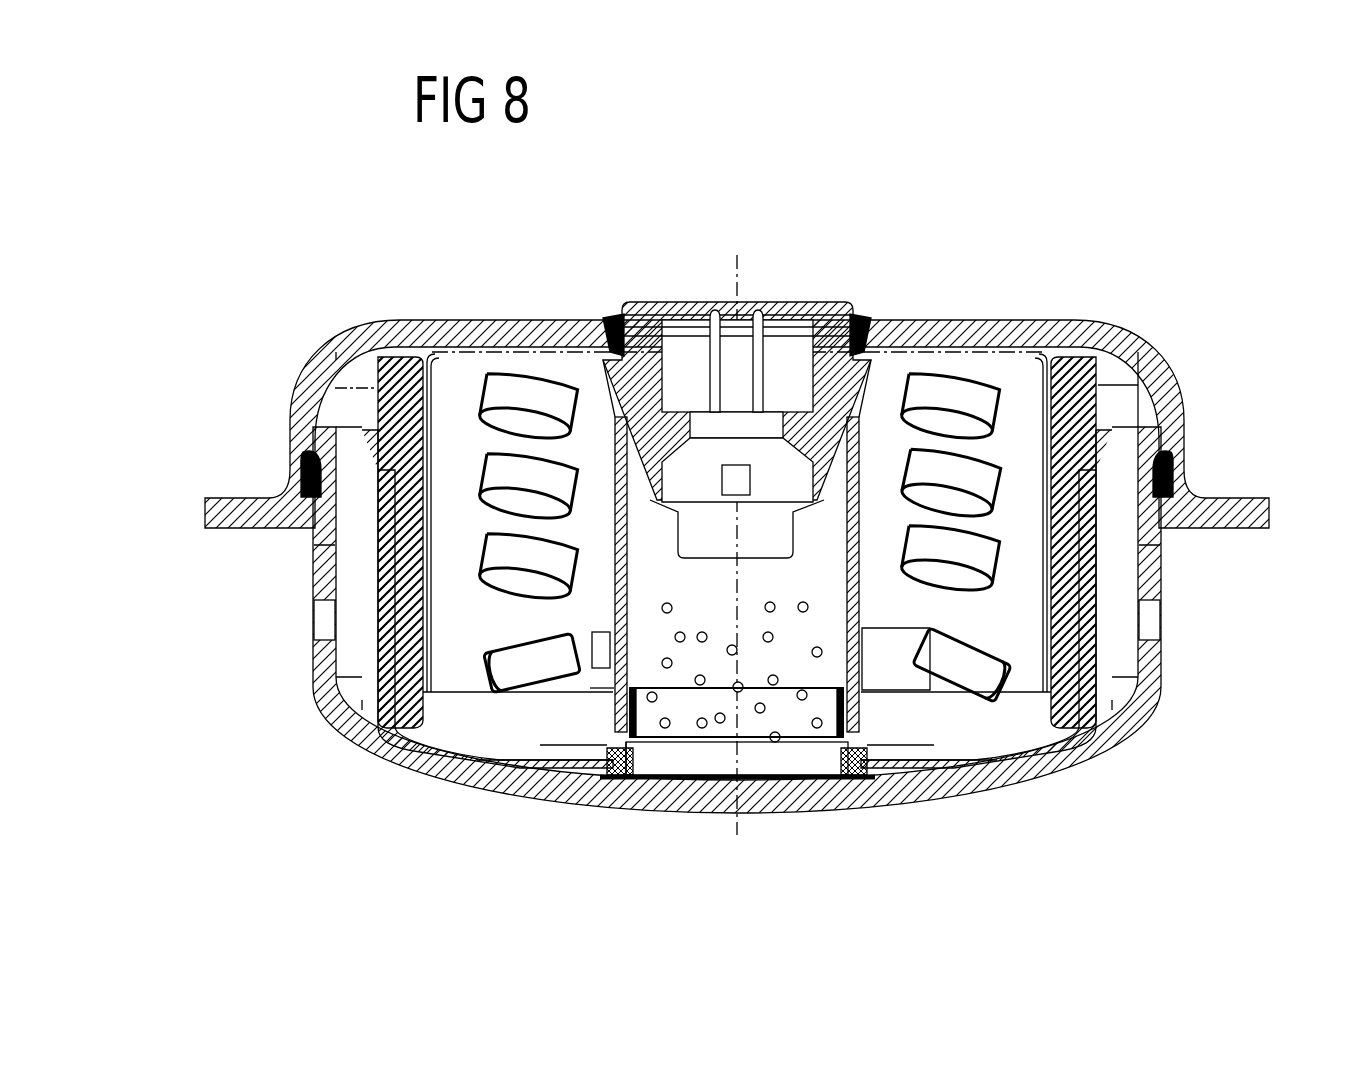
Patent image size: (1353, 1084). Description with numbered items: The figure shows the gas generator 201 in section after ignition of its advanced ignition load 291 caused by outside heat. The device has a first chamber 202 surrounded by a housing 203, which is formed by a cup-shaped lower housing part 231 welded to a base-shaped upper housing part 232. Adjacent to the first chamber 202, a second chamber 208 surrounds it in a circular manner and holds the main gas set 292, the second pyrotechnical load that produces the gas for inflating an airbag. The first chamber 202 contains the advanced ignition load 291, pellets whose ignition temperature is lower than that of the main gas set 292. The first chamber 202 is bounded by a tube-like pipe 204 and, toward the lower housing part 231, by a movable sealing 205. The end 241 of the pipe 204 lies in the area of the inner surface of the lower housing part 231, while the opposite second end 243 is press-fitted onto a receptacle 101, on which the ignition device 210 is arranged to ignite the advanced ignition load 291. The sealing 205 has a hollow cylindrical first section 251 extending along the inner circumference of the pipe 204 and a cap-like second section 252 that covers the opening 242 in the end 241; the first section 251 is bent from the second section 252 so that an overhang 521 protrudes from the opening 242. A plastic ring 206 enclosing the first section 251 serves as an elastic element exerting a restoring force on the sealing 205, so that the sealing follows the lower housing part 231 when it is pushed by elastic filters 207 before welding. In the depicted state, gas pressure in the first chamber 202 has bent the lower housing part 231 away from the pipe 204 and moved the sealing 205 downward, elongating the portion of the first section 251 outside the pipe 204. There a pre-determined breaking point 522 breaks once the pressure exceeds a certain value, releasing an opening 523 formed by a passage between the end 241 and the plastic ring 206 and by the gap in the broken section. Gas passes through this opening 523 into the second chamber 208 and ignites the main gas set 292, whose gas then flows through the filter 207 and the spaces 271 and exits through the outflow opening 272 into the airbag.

The gas generator 201 is at (350, 300).
The first chamber 202 is at (863, 430).
The housing 203 is at (1100, 385).
The pipe 204 is at (603, 430).
The sealing 205 is at (840, 795).
The plastic ring 206 is at (870, 792).
The filter 207 is at (330, 728).
The second chamber 208 is at (447, 388).
The ignition device 210 is at (720, 330).
The receptacle 101 is at (847, 312).
The lower housing part 231 is at (1040, 764).
The upper housing part 232 is at (1128, 332).
The end 241 is at (612, 712).
The opening 242 is at (866, 705).
The second end 243 is at (630, 447).
The first section 251 is at (690, 800).
The second section 252 is at (605, 772).
The spaces 271 is at (333, 574).
The outflow opening 272 is at (316, 618).
The advanced ignition load 291 is at (770, 618).
The main gas set 292 is at (492, 580).
The overhang 521 is at (622, 783).
The pre-determined breaking point 522 is at (610, 790).
The opening 523 is at (500, 792).